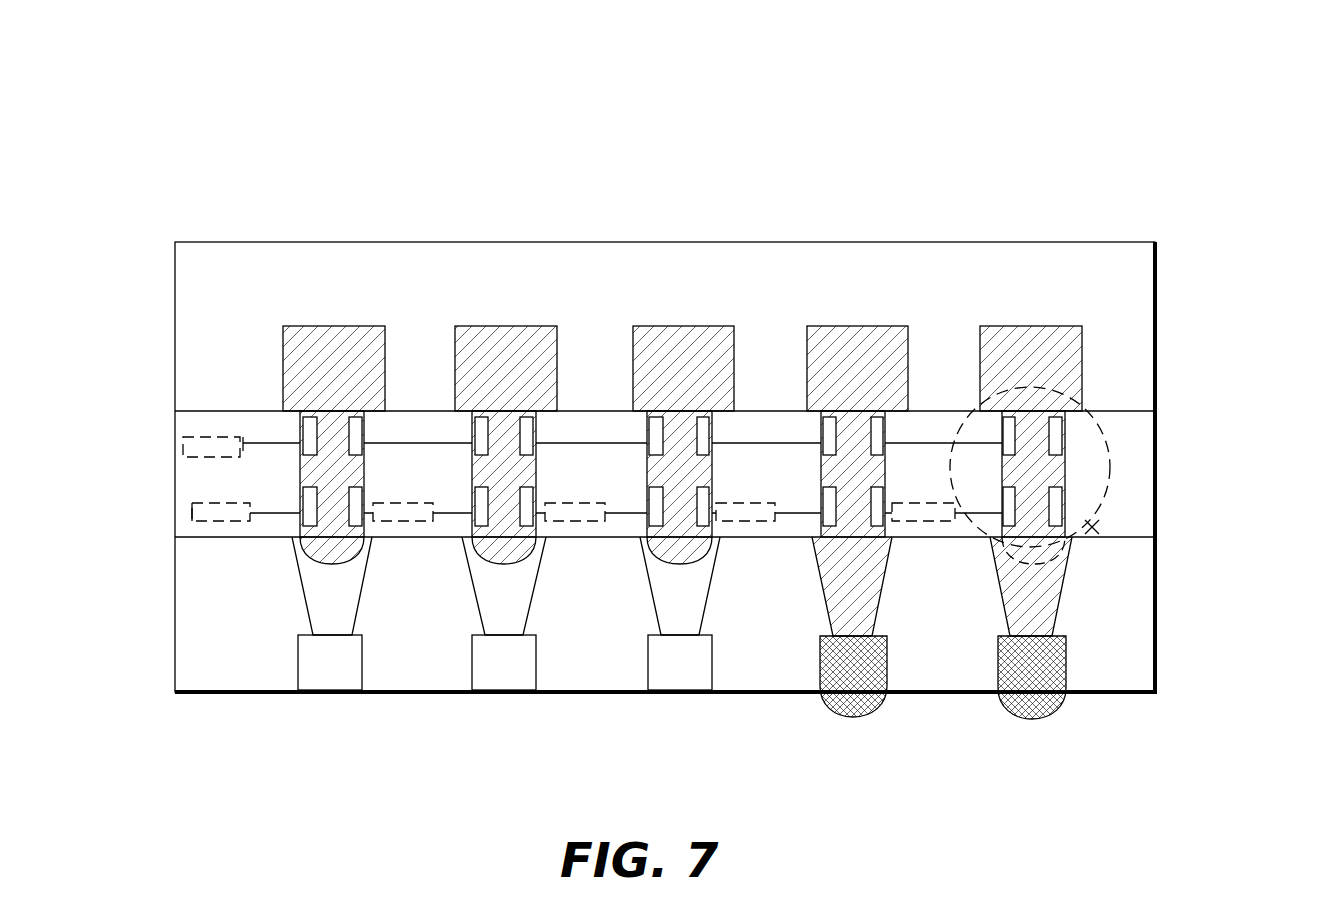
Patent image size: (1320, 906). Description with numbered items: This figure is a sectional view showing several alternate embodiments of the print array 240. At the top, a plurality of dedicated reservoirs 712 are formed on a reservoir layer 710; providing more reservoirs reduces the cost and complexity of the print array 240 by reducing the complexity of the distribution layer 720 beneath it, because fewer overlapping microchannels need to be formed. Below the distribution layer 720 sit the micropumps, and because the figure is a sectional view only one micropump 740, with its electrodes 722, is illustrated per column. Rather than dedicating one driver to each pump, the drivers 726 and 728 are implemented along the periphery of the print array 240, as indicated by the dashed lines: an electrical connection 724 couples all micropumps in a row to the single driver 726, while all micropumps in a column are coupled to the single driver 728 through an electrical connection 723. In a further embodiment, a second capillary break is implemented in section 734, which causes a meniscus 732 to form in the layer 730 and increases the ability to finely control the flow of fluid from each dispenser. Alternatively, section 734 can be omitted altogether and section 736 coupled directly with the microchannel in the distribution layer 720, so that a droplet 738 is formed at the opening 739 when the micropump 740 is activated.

The print array 240 is at (258, 136).
The reservoir layer 710 is at (1157, 265).
The dedicated reservoirs 712 is at (366, 340).
The distribution layer 720 is at (1157, 422).
The electrodes 722 is at (1057, 510).
The electrical connection 723 is at (273, 446).
The electrical connection 724 is at (272, 515).
The driver 726 is at (192, 513).
The driver 728 is at (192, 447).
The layer 730 is at (1157, 663).
The meniscus 732 is at (345, 552).
The section 734 is at (313, 587).
The section 736 is at (884, 667).
The droplet 738 is at (846, 713).
The opening 739 is at (515, 693).
The micropump 740 is at (1092, 527).